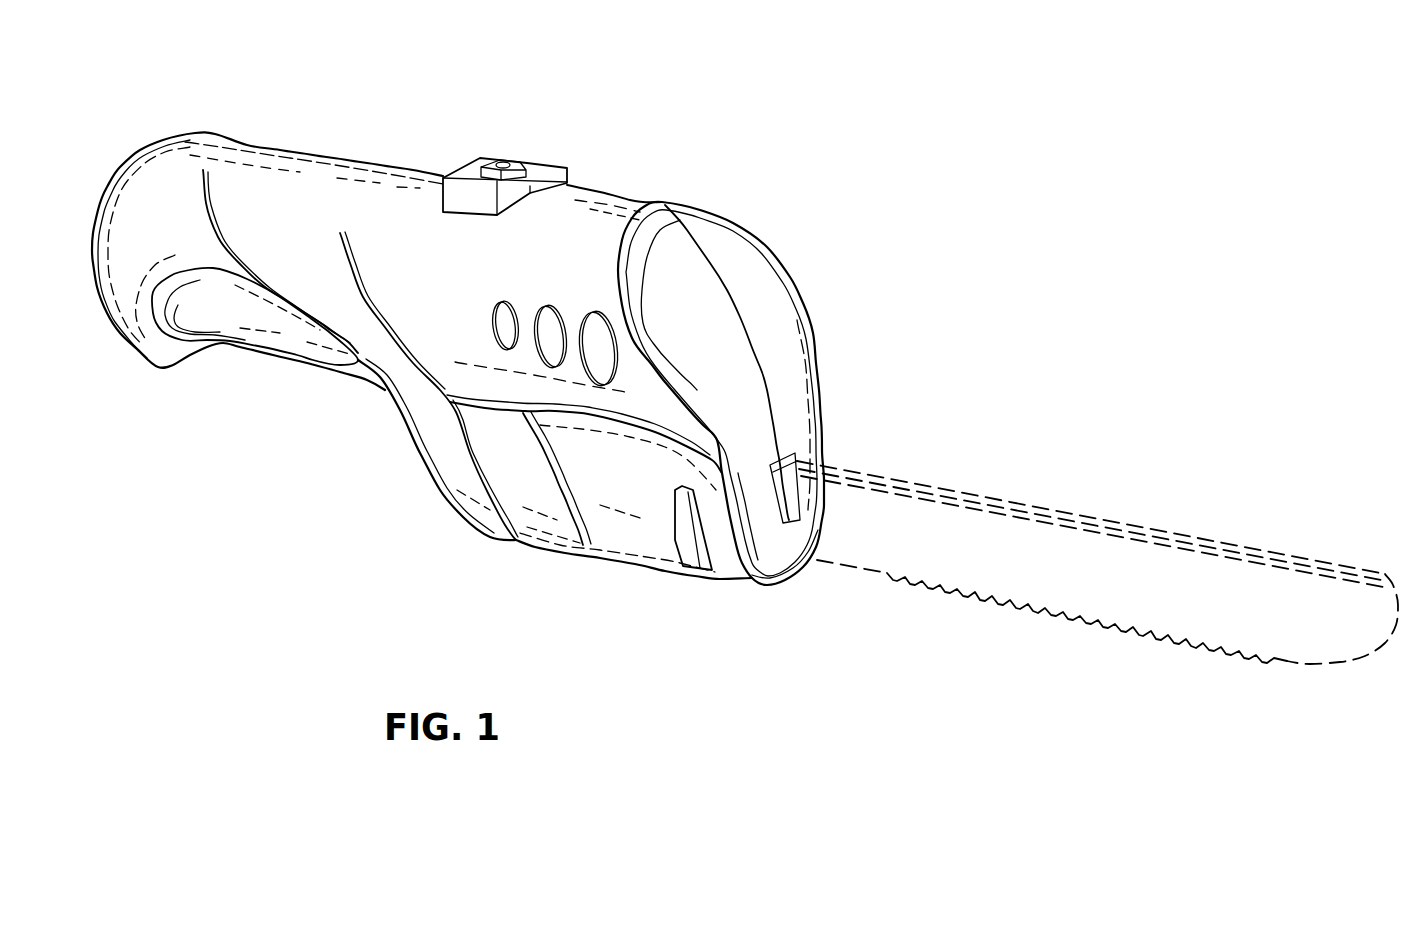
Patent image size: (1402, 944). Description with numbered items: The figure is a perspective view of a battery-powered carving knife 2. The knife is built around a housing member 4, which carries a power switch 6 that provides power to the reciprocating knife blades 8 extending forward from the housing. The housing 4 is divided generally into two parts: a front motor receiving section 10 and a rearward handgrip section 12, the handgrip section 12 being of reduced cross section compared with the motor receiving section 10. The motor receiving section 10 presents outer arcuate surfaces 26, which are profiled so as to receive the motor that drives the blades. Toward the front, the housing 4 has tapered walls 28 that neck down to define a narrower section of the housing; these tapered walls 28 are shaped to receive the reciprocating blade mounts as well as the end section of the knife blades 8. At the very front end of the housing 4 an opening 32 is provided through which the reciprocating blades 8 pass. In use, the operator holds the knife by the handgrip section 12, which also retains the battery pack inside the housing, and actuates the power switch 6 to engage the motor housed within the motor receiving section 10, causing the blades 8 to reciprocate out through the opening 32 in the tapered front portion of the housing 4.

The carving knife 2 is at (857, 173).
The housing member 4 is at (637, 193).
The power switch 6 is at (515, 150).
The reciprocating knife blades 8 is at (981, 505).
The front motor receiving section 10 is at (703, 317).
The handgrip section 12 is at (258, 177).
The outer arcuate surfaces 26 is at (449, 283).
The tapered walls 28 is at (622, 488).
The opening 32 is at (797, 523).